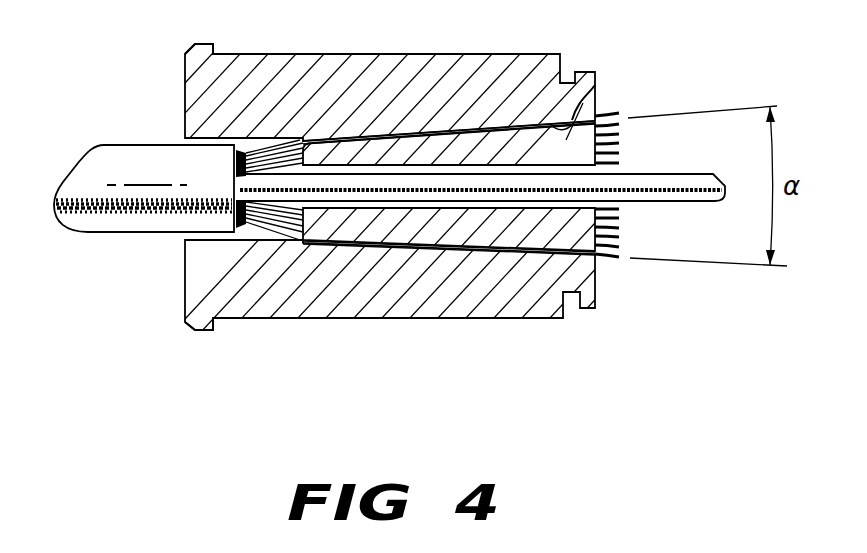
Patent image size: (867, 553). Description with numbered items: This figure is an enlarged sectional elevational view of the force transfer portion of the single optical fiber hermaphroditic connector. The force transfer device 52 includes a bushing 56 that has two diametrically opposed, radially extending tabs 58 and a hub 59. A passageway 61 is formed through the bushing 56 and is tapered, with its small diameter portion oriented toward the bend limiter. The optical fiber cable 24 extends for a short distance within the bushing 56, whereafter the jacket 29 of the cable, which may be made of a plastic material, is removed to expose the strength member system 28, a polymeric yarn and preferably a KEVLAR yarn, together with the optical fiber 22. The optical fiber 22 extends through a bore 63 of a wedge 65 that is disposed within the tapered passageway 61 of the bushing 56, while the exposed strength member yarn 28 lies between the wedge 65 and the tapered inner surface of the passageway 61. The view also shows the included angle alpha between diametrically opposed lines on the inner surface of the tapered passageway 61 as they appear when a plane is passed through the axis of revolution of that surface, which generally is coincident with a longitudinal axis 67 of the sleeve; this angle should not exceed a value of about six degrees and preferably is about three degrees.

The optical fiber 22 is at (647, 180).
The optical fiber cable 24 is at (144, 193).
The strength member system 28 is at (248, 226).
The jacket 29 is at (108, 228).
The device 52 is at (433, 200).
The bushing 56 is at (433, 200).
The tabs 58 is at (204, 46).
The hub 59 is at (482, 66).
The passageway 61 is at (597, 83).
The bore 63 is at (520, 205).
The wedge 65 is at (475, 238).
The longitudinal axis 67 is at (129, 186).